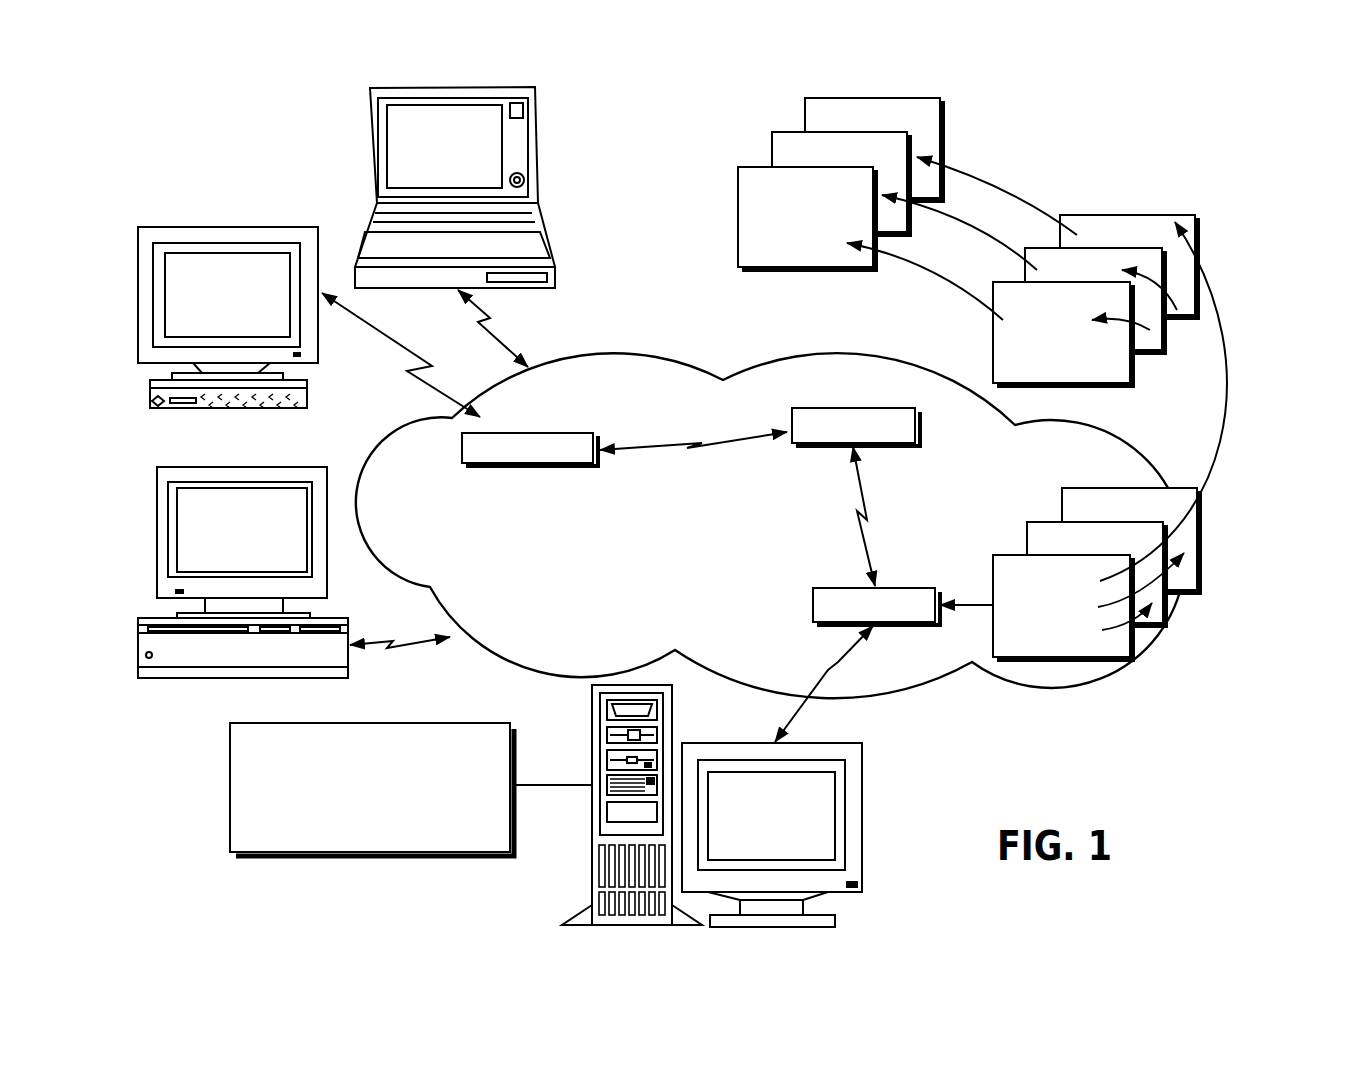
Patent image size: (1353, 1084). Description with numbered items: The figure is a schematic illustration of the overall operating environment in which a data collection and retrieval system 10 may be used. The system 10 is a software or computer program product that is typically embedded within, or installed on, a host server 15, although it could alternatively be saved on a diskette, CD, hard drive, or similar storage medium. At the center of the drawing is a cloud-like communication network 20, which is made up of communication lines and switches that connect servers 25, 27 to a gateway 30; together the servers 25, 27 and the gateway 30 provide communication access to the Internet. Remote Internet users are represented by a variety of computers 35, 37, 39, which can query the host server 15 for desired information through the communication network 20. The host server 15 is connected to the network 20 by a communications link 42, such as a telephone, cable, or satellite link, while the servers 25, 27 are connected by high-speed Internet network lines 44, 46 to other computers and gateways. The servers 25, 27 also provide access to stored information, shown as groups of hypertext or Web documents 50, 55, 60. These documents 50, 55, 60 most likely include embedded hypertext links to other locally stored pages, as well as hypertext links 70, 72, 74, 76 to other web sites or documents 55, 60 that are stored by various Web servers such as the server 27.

The data collection and retrieval system 10 is at (228, 767).
The host server 15 is at (592, 730).
The communication network 20 is at (647, 357).
The server 25 is at (857, 588).
The server 27 is at (870, 408).
The gateway 30 is at (530, 470).
The computer 35 is at (548, 236).
The computer 37 is at (290, 226).
The computer 39 is at (290, 466).
The communications link 42 is at (793, 720).
The high-speed Internet network line 44 is at (867, 540).
The high-speed Internet network line 46 is at (683, 443).
The hypertext documents 50 is at (1207, 557).
The hypertext documents 55 is at (1207, 238).
The hypertext documents 60 is at (757, 152).
The hypertext link 70 is at (1228, 405).
The hypertext link 72 is at (1018, 199).
The hypertext link 74 is at (979, 238).
The hypertext link 76 is at (932, 281).